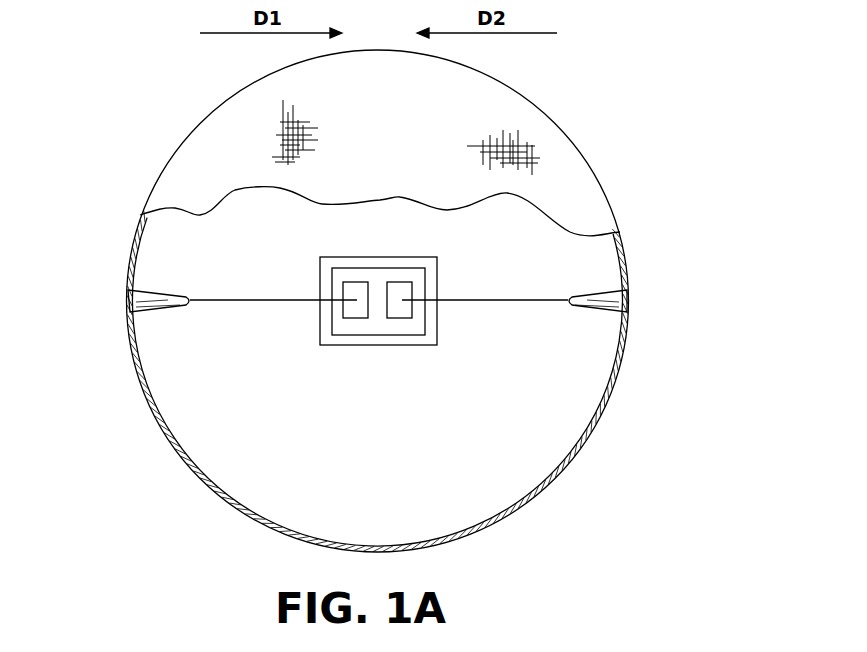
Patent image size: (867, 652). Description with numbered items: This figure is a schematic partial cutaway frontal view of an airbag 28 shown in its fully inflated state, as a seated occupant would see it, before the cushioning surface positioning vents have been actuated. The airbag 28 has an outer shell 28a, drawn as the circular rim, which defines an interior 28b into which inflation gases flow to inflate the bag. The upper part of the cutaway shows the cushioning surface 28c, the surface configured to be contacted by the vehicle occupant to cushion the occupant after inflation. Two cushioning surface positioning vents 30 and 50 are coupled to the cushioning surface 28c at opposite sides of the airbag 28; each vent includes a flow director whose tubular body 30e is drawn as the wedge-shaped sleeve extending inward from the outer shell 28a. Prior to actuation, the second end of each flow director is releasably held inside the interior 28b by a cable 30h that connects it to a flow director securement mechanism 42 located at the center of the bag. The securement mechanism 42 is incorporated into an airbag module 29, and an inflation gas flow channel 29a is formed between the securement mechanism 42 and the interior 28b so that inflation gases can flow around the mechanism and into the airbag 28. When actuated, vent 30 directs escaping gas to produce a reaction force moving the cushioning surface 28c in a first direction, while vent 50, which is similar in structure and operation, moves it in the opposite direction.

The airbag 28 is at (176, 149).
The outer shell 28a is at (630, 247).
The interior 28b is at (228, 410).
The cushioning surface 28c is at (242, 122).
The airbag module 29 is at (358, 257).
The inflation gas flow channel 29a is at (430, 275).
The cushioning surface positioning vent 30 is at (295, 295).
The tubular body 30e is at (150, 296).
The cable 30h is at (228, 300).
The flow director securement mechanism 42 is at (376, 323).
The cushioning surface positioning vent 50 is at (597, 311).